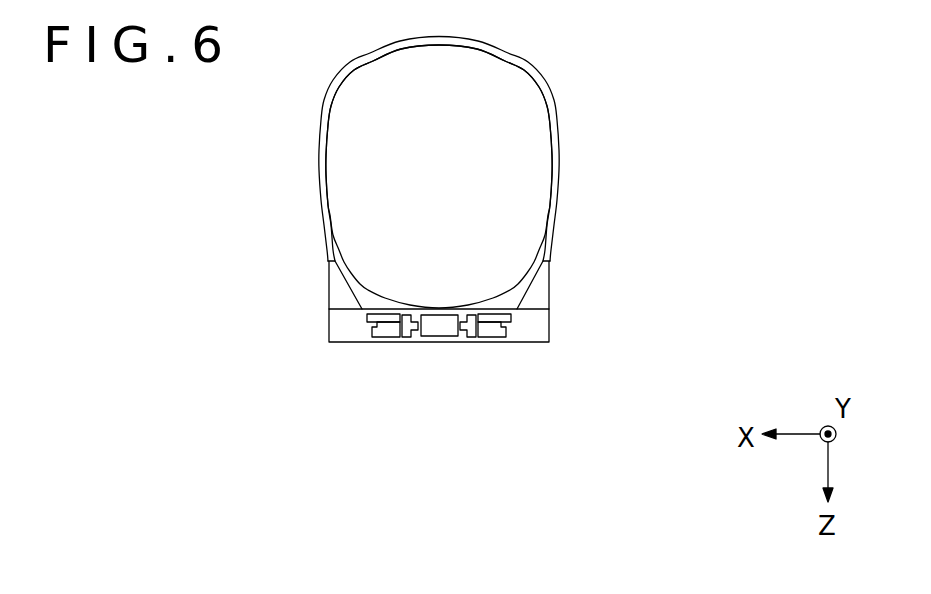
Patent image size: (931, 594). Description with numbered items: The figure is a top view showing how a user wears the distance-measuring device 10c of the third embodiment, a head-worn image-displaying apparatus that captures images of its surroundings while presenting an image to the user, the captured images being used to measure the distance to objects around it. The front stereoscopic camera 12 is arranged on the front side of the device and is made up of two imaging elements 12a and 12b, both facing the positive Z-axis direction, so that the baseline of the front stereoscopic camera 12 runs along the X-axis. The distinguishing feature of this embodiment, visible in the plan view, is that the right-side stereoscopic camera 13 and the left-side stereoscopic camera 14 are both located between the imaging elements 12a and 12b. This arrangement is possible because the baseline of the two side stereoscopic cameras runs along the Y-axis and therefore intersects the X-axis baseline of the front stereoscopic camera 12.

The distance-measuring device 10c is at (583, 338).
The front stereoscopic camera 12 is at (440, 423).
The imaging element 12a is at (364, 342).
The imaging element 12b is at (512, 342).
The right-side stereoscopic camera 13 is at (410, 344).
The left-side stereoscopic camera 14 is at (473, 344).